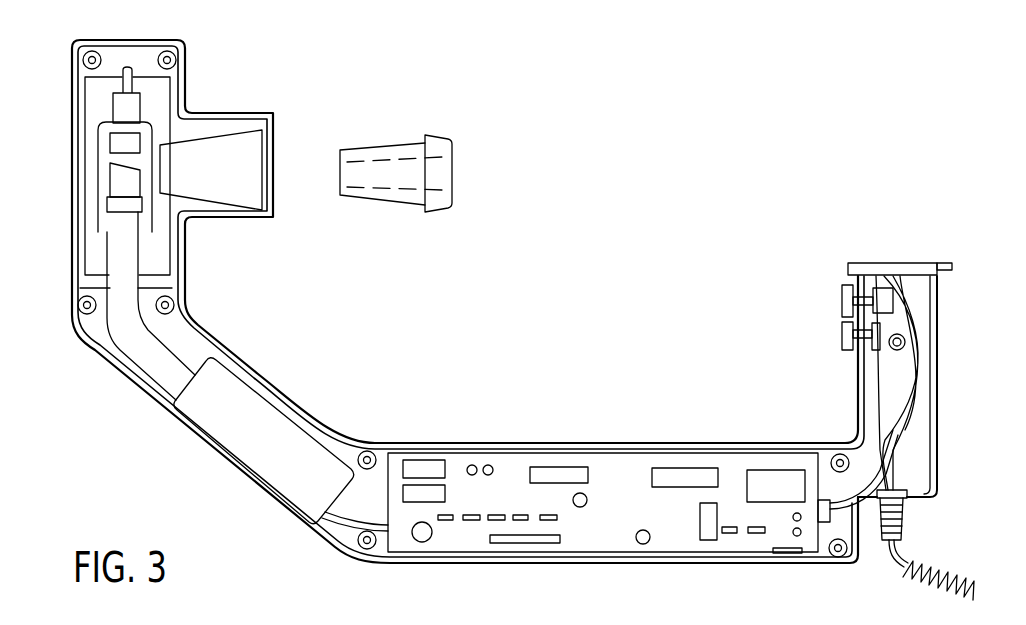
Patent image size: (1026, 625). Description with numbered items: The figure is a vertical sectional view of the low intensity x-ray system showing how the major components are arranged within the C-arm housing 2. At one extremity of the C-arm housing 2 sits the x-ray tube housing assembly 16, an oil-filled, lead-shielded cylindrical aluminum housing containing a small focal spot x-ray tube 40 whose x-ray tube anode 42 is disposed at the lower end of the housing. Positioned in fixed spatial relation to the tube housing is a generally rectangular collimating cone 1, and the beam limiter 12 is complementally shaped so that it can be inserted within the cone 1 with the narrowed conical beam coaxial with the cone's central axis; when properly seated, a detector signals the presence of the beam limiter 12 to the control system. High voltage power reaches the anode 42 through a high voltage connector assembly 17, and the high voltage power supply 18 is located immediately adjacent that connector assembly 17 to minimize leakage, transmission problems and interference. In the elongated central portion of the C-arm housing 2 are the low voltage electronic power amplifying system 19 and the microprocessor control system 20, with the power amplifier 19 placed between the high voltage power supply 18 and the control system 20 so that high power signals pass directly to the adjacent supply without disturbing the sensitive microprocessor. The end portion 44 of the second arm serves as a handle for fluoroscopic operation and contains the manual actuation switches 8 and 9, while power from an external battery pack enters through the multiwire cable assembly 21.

The collimating cone 1 is at (253, 139).
The C-arm housing 2 is at (480, 443).
The manual actuation switch 8 is at (842, 302).
The manual actuation switch 9 is at (842, 340).
The beam limiter 12 is at (387, 145).
The x-ray tube housing assembly 16 is at (157, 97).
The high voltage connector assembly 17 is at (149, 348).
The high voltage power supply 18 is at (296, 418).
The low voltage electronic power amplifying system 19 is at (470, 522).
The microprocessor control system 20 is at (688, 530).
The multiwire cable assembly 21 is at (947, 573).
The small focal spot x-ray tube 40 is at (107, 122).
The x-ray tube anode 42 is at (128, 172).
The end portion of the second arm 44 is at (937, 383).